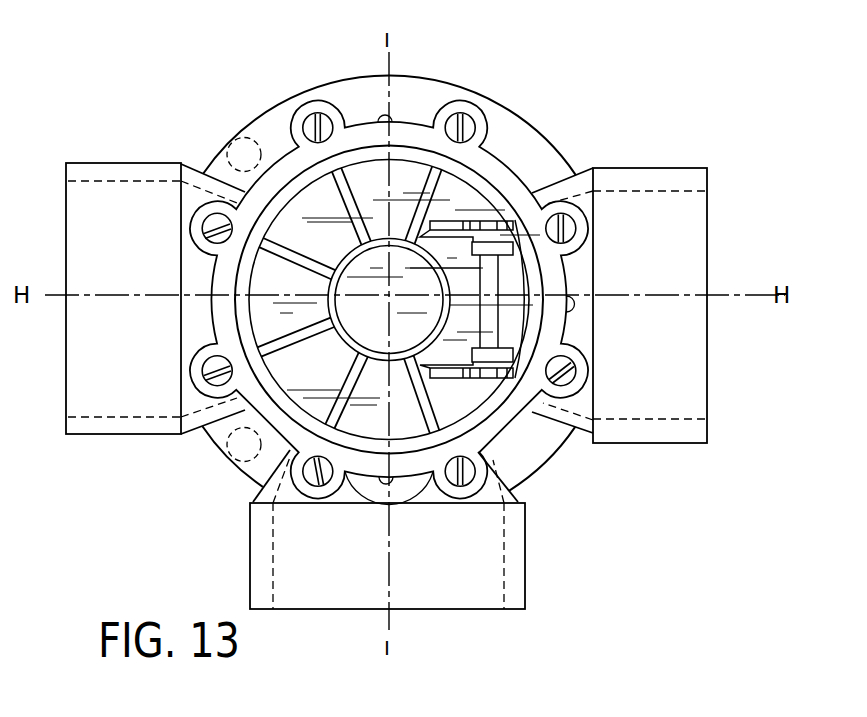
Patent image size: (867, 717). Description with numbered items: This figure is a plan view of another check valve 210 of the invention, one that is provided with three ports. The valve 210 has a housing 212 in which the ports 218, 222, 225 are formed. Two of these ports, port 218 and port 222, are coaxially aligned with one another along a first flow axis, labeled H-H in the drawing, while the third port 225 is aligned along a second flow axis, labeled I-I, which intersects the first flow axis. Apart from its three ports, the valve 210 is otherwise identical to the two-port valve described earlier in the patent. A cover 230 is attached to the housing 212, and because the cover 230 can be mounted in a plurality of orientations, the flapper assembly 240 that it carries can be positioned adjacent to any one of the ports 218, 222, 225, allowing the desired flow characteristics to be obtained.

The valve 210 is at (603, 95).
The housing 212 is at (425, 102).
The port 218 is at (680, 192).
The port 222 is at (103, 180).
The port 225 is at (492, 614).
The cover 230 is at (293, 165).
The flapper assembly 240 is at (493, 387).